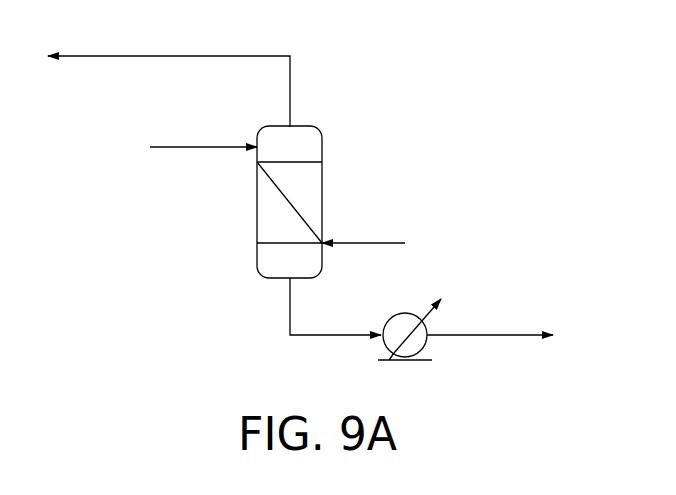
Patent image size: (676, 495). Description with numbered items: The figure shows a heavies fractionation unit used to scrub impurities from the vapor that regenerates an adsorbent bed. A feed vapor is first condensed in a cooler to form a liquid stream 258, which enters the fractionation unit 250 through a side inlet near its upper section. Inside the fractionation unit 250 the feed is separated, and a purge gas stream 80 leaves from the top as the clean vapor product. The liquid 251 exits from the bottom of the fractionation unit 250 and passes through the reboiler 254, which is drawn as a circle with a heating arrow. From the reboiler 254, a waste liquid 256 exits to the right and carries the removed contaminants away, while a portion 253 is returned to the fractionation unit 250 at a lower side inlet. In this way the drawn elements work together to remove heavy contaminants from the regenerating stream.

The purge gas stream 80 is at (291, 91).
The liquid stream 258 is at (190, 129).
The fractionation unit 250 is at (257, 202).
The portion returning to fractionation unit 253 is at (363, 241).
The liquid 251 is at (290, 306).
The reboiler 254 is at (428, 328).
The waste liquid 256 is at (508, 337).